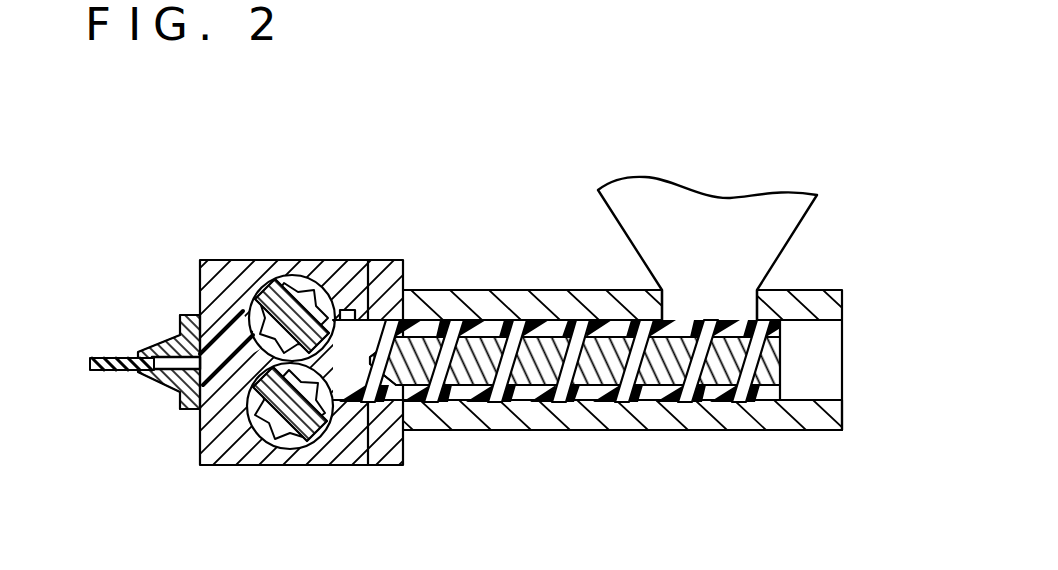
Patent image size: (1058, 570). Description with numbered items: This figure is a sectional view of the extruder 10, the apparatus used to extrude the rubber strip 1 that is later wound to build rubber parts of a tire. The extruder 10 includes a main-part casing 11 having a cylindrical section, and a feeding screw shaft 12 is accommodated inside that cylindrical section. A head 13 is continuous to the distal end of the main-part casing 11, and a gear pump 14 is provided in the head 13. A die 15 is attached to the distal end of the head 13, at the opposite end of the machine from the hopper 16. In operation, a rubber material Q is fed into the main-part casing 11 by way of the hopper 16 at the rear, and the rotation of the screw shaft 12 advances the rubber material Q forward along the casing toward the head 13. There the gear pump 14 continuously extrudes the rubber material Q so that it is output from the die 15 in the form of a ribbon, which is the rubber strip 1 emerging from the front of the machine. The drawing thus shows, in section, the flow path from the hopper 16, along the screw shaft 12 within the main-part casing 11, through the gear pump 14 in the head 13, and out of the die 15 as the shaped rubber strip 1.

The rubber strip 1 is at (108, 356).
The extruder 10 is at (618, 343).
The main-part casing 11 is at (586, 424).
The feeding screw shaft 12 is at (614, 431).
The head 13 is at (259, 258).
The gear pump 14 is at (296, 275).
The die 15 is at (177, 393).
The hopper 16 is at (697, 210).
The rubber material Q is at (729, 398).